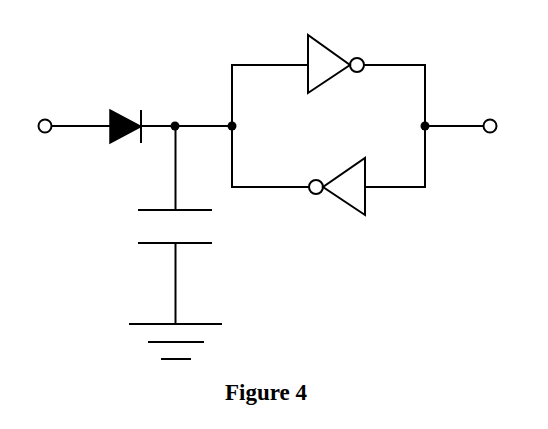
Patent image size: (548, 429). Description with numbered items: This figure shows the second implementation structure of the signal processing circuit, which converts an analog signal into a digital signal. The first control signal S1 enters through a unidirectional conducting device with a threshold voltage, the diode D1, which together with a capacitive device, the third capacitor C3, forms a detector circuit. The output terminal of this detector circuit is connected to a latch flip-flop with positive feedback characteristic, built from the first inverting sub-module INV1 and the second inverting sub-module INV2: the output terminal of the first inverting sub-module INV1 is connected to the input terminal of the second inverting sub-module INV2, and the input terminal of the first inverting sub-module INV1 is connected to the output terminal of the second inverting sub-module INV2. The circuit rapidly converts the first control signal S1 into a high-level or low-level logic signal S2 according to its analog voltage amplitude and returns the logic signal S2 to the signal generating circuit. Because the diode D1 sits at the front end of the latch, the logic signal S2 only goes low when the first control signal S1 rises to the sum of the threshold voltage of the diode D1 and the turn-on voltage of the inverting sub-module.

The first control signal S1 is at (72, 111).
The diode D1 is at (171, 116).
The third capacitor C3 is at (186, 242).
The first inverting sub-module INV1 is at (328, 70).
The second inverting sub-module INV2 is at (328, 189).
The logic signal S2 is at (463, 112).